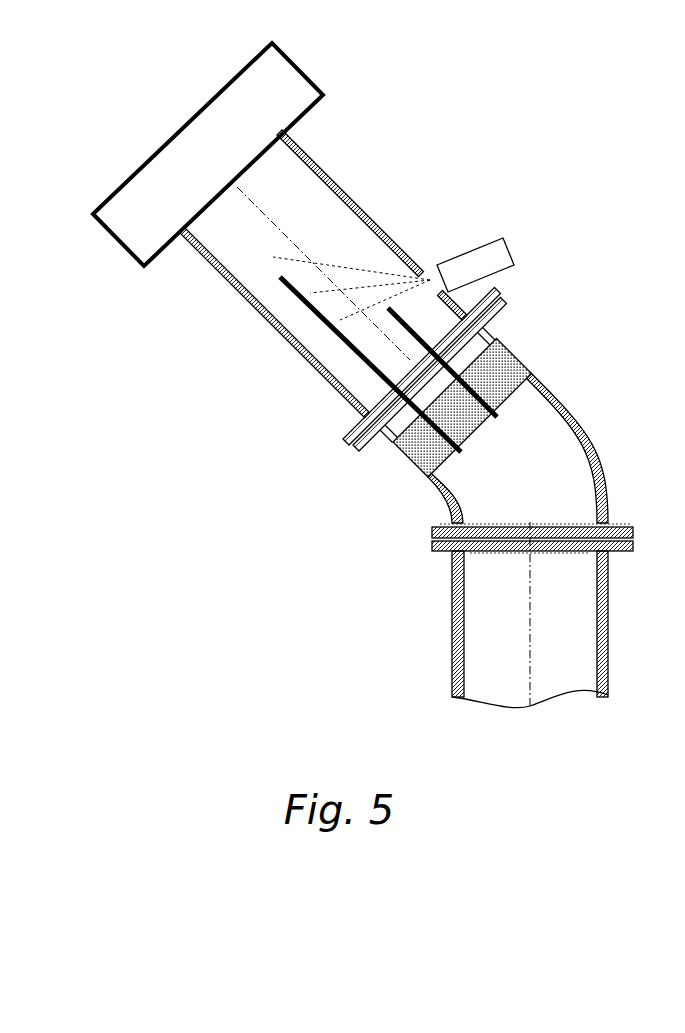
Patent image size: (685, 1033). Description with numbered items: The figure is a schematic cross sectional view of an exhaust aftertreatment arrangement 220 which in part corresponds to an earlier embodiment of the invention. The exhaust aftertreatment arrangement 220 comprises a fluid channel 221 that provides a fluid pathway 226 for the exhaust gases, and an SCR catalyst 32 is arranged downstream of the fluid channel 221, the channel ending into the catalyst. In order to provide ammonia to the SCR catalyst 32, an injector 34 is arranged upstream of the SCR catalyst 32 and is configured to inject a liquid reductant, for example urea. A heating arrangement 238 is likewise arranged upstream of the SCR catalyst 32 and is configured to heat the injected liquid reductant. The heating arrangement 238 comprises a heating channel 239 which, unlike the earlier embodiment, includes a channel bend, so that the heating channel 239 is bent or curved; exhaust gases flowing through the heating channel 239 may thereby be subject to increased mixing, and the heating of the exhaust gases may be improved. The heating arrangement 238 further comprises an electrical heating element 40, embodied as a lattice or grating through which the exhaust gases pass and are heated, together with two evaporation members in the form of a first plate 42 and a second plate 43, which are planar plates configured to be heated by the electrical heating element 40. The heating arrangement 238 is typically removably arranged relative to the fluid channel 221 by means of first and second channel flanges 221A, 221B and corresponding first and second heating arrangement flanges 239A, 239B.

The exhaust aftertreatment arrangement 220 is at (599, 152).
The SCR catalyst 32 is at (131, 178).
The fluid channel 221 is at (384, 224).
The injector 34 is at (480, 243).
The second plate 43 is at (280, 279).
The first plate 42 is at (395, 343).
The first channel flange 221A is at (345, 440).
The first heating arrangement flange 239A is at (356, 453).
The heating arrangement 238 is at (617, 350).
The electrical heating element 40 is at (427, 476).
The heating channel 239 is at (563, 403).
The second heating arrangement flange 239B is at (620, 525).
The second channel flange 221B is at (620, 553).
The fluid pathway 226 is at (490, 686).